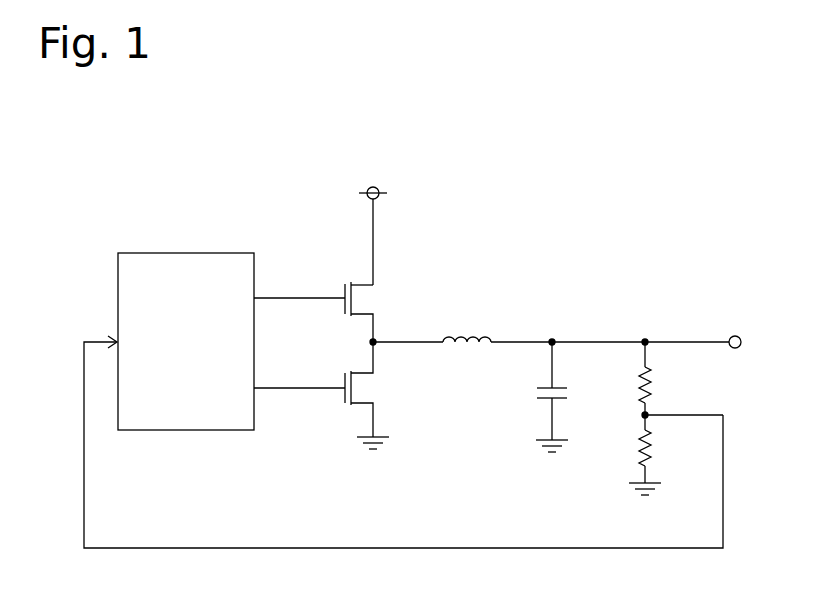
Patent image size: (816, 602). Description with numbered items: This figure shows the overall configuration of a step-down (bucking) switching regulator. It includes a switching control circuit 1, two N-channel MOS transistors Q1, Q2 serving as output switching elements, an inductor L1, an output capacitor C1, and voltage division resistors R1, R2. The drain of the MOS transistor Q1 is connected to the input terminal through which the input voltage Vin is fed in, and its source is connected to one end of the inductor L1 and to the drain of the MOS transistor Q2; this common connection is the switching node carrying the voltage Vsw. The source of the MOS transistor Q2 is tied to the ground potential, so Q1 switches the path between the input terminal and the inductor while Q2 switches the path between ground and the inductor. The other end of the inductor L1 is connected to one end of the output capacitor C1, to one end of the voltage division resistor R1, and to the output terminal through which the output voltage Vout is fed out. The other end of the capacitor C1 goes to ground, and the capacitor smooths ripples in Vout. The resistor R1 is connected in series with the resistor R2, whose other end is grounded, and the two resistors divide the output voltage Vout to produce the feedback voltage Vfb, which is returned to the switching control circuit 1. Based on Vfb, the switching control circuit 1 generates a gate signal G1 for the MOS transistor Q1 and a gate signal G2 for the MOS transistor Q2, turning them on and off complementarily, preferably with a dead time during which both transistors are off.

The switching control circuit 1 is at (185, 253).
The MOS transistor Q1 is at (345, 283).
The MOS transistor Q2 is at (345, 405).
The inductor L1 is at (470, 335).
The output capacitor C1 is at (568, 394).
The voltage division resistor R1 is at (654, 384).
The voltage division resistor R2 is at (656, 446).
The gate signal G1 is at (299, 288).
The gate signal G2 is at (299, 378).
The input voltage Vin is at (378, 224).
The switching node voltage Vsw is at (379, 343).
The output voltage Vout is at (753, 330).
The feedback voltage Vfb is at (403, 442).